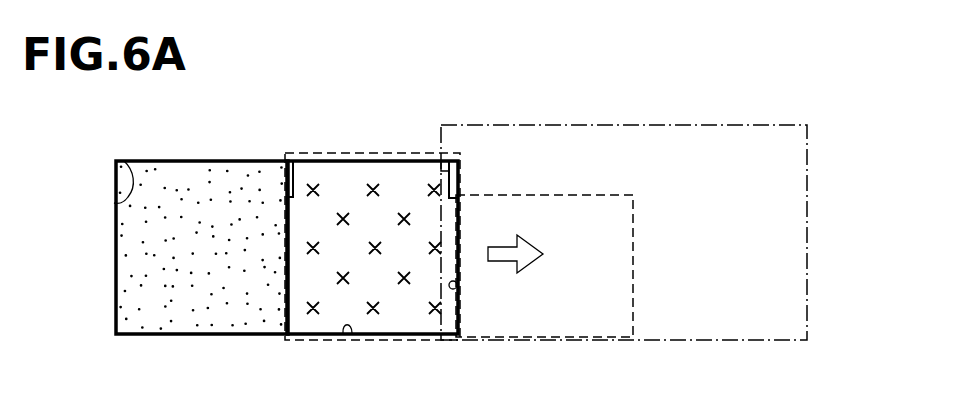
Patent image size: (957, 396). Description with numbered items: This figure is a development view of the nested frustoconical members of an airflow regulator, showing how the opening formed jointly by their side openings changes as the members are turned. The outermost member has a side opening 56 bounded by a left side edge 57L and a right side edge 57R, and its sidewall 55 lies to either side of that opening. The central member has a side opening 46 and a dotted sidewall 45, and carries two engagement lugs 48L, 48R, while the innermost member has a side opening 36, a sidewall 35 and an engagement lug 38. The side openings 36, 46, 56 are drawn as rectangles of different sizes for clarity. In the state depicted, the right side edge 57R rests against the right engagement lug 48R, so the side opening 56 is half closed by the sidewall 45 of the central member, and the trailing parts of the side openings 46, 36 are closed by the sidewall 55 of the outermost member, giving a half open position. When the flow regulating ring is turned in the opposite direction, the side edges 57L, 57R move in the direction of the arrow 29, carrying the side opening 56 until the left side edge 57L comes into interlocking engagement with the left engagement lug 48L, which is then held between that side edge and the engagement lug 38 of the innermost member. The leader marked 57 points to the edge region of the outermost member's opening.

The sidewall 55 is at (82, 260).
The sidewall 45 is at (191, 219).
The side edge 57L is at (124, 161).
The frame 57 is at (447, 232).
The sidewall 35 is at (353, 200).
The engagement lug 48L is at (287, 160).
The engagement lug 48R is at (456, 160).
The engagement lug 38 is at (446, 160).
The side edge 57R is at (455, 289).
The arrow 29 is at (490, 247).
The side opening 46 is at (578, 338).
The side opening 36 is at (712, 338).
The side opening 56 is at (352, 333).